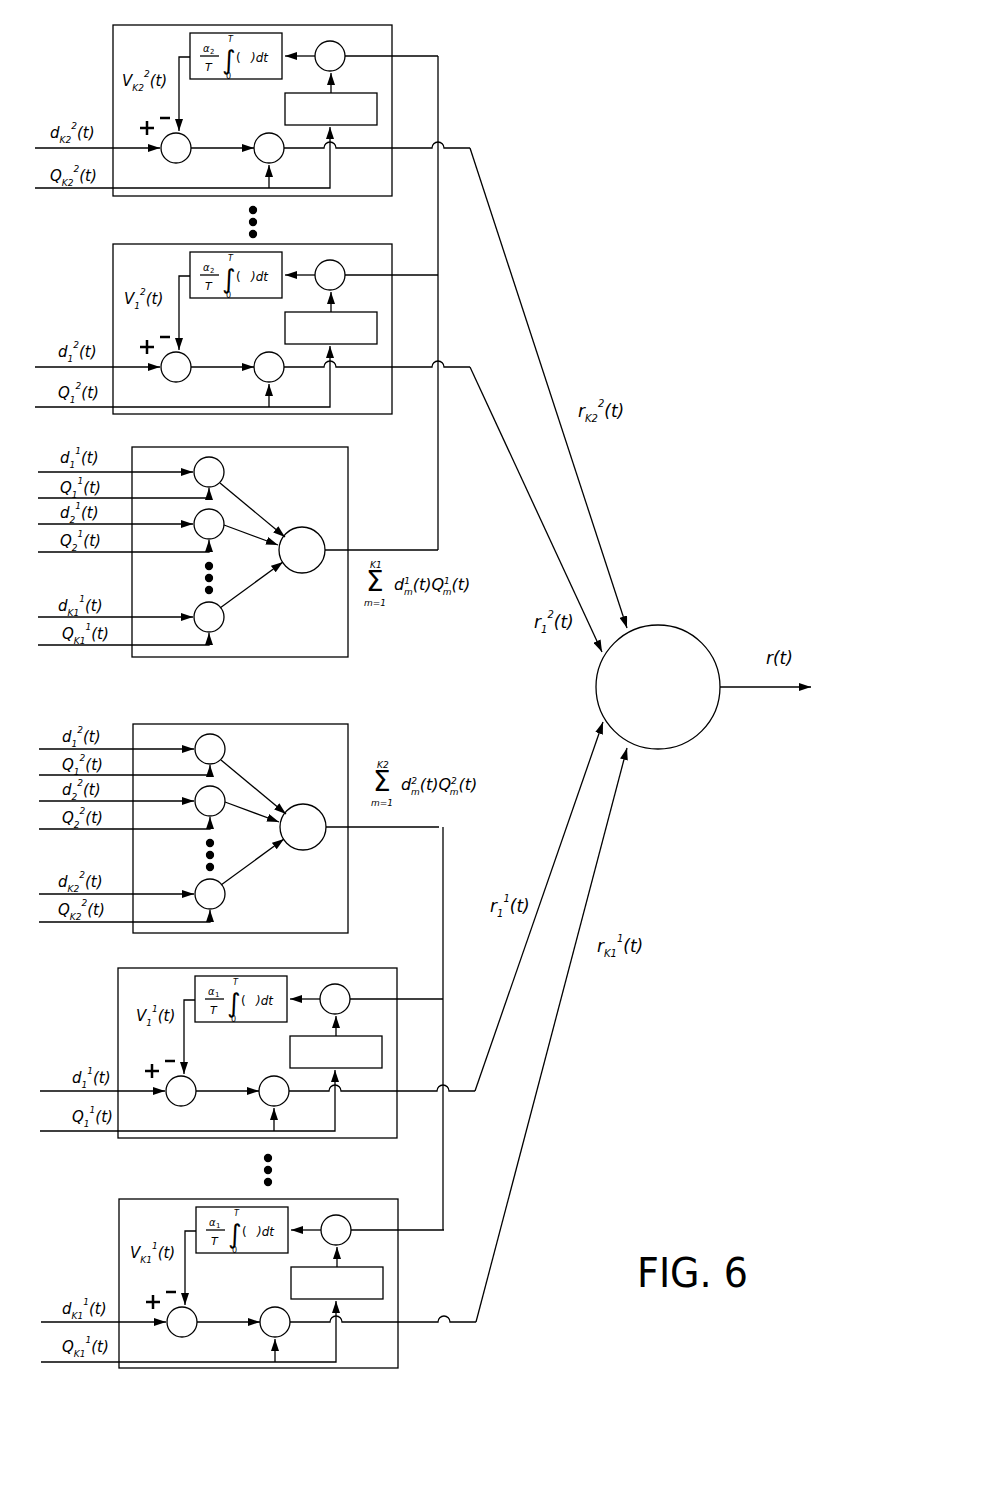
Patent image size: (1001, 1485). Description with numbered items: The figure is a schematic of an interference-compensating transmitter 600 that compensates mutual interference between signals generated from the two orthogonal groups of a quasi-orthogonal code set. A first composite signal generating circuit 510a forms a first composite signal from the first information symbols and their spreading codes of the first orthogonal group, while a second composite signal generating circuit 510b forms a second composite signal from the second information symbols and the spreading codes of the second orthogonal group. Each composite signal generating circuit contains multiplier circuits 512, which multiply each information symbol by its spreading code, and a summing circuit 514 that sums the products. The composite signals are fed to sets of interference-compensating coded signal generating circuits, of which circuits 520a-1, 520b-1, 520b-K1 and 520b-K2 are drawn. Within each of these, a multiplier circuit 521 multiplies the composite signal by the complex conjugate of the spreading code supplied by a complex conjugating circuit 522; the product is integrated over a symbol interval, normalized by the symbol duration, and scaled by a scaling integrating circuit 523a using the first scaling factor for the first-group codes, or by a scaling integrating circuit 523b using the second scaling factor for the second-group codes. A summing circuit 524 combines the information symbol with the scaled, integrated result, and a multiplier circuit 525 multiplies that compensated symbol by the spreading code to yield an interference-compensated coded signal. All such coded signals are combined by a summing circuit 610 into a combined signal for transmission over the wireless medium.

The interference-compensating transmitter 600 is at (626, 193).
The summing circuit 610 is at (657, 627).
The first composite signal generating circuit 510a is at (236, 448).
The second composite signal generating circuit 510b is at (240, 724).
The multiplier circuit 512 is at (243, 911).
The summing circuit 514 is at (317, 798).
The first interference-compensating coded signal generating circuit 520a-1 is at (256, 968).
The second interference-compensating coded signal generating circuit 520b-1 is at (268, 415).
The interference-compensating coded signal generating circuit 520b-K1 is at (264, 1199).
The second interference-compensating coded signal generating circuit 520b-K2 is at (270, 197).
The multiplier circuit 521 is at (358, 1210).
The complex conjugating circuit 522 is at (291, 1282).
The scaling integrating circuit 523a is at (240, 301).
The scaling integrating circuit 523b is at (246, 1256).
The summing circuit 524 is at (180, 1337).
The multiplier circuit 525 is at (268, 1311).